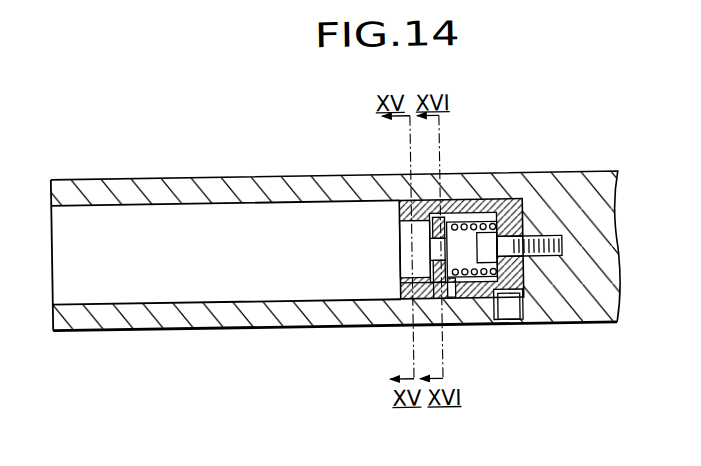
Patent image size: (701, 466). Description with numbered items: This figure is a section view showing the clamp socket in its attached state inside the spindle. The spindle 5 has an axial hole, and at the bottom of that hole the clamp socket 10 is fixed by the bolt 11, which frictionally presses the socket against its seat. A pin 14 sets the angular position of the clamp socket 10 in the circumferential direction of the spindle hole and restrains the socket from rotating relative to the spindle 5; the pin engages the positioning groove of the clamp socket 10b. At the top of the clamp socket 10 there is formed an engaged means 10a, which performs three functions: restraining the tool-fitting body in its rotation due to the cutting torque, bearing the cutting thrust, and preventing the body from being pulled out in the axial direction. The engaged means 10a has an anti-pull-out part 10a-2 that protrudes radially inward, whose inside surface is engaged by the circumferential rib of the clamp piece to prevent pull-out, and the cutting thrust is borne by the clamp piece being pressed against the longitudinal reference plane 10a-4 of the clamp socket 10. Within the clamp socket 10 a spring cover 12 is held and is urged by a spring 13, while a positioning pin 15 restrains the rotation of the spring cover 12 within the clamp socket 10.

The spindle 5 is at (214, 172).
The clamp socket 10 is at (421, 192).
The engaged means 10a is at (441, 292).
The anti-pull-out part 10a-2 is at (401, 226).
The longitudinal reference plane 10a-4 is at (418, 296).
The bolt 11 is at (545, 242).
The spring cover 12 is at (463, 221).
The spring 13 is at (497, 235).
The pin 14 is at (457, 293).
The positioning pin 15 is at (463, 283).
The clamp socket 10b is at (506, 320).